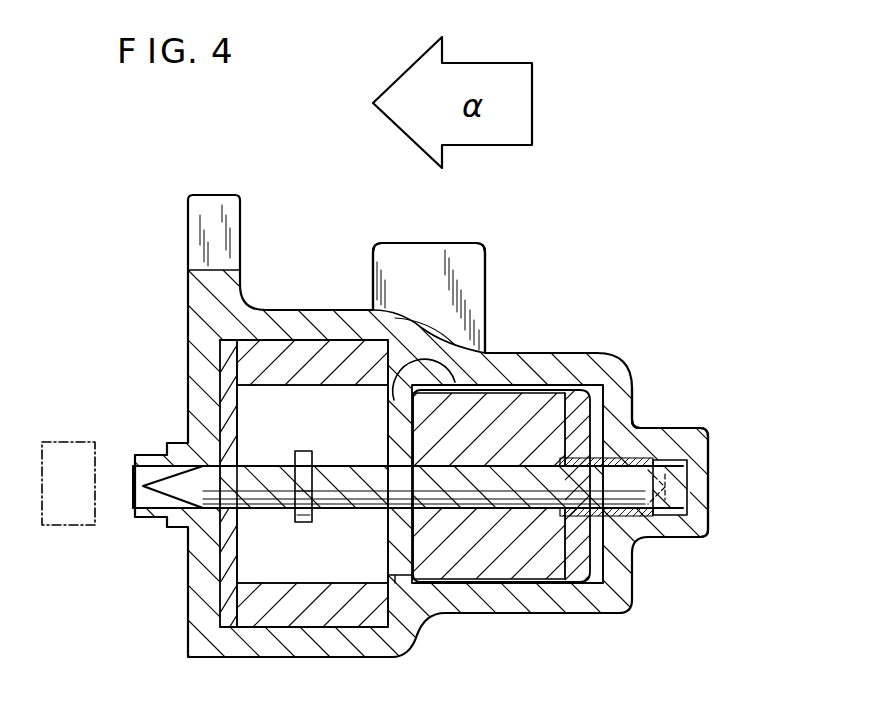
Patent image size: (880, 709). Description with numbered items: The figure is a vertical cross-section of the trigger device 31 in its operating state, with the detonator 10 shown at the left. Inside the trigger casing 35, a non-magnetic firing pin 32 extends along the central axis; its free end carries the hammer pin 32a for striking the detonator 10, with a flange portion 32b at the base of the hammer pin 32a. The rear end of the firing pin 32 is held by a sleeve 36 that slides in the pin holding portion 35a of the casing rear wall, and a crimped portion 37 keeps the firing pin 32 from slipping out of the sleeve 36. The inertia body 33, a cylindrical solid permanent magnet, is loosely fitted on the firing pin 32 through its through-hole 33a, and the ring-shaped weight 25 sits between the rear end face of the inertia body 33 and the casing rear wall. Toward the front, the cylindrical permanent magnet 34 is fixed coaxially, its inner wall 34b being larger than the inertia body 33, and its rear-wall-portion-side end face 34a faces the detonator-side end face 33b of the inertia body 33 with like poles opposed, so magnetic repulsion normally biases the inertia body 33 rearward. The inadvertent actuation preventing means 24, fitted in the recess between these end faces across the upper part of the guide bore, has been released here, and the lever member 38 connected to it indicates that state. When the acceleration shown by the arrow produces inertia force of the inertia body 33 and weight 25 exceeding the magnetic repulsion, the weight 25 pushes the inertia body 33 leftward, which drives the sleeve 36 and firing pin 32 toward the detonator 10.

The detonator 10 is at (68, 436).
The inadvertent actuation preventing means 24 is at (462, 339).
The weight 25 is at (643, 498).
The trigger device 31 is at (440, 426).
The firing pin 32 is at (312, 484).
The hammer pin 32a is at (400, 444).
The flange portion 32b is at (282, 456).
The inertia body 33 is at (569, 524).
The through-hole 33a is at (469, 395).
The detonator-side end face 33b is at (467, 545).
The cylindrical permanent magnet 34 is at (290, 450).
The rear-wall-portion-side end face 34a is at (435, 625).
The inner wall 34b is at (292, 582).
The trigger casing 35 is at (606, 395).
The pin holding portion 35a is at (715, 475).
The sleeve 36 is at (651, 379).
The crimped portion 37 is at (716, 491).
The lever member 38 is at (440, 268).